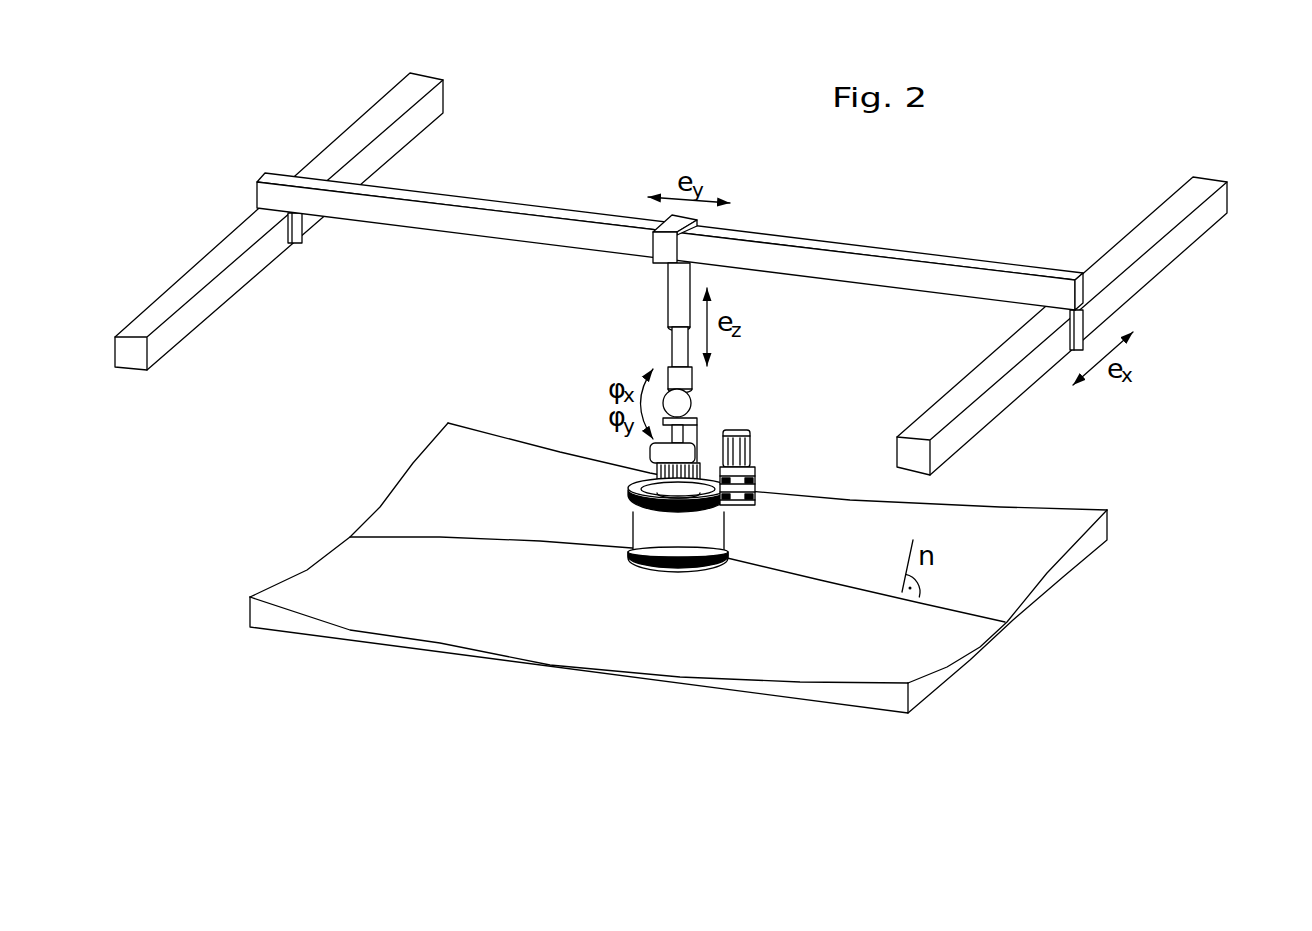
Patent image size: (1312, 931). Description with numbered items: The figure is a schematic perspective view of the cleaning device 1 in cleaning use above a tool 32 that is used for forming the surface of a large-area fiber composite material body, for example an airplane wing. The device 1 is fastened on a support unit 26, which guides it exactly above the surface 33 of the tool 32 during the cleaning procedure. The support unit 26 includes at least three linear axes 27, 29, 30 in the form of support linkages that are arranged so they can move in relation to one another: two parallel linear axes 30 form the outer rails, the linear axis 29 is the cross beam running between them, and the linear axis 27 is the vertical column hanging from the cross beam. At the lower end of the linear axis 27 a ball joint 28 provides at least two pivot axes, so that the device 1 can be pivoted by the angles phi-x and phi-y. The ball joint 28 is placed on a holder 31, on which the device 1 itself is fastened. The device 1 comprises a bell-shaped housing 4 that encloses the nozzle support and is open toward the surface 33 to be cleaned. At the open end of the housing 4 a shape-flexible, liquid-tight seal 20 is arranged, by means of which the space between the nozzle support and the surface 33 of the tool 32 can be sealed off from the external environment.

The device 1 is at (693, 558).
The housing 4 is at (705, 537).
The shape-flexible liquid-tight seal 20 is at (660, 573).
The support unit 26 is at (699, 266).
The linear axis 27 is at (678, 300).
The ball joint 28 is at (680, 401).
The linear axis 29 is at (507, 227).
The linear axis 30 is at (208, 268).
The holder 31 is at (718, 462).
The tool 32 is at (405, 466).
The surface 33 is at (347, 602).